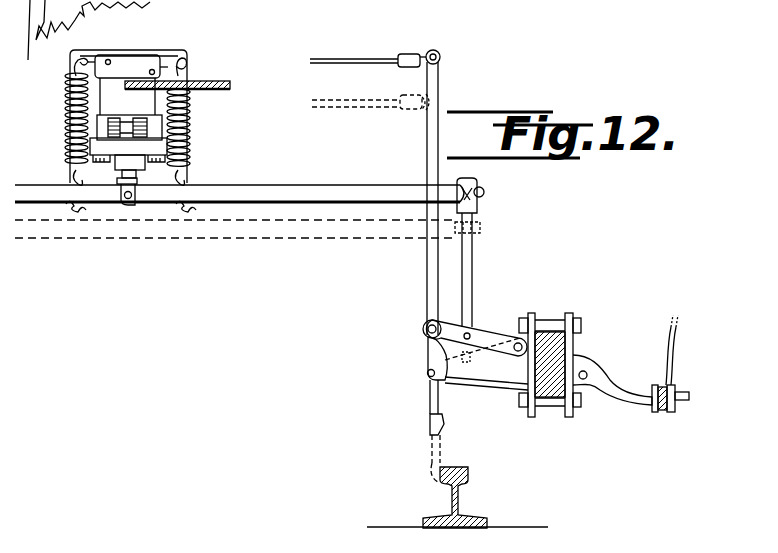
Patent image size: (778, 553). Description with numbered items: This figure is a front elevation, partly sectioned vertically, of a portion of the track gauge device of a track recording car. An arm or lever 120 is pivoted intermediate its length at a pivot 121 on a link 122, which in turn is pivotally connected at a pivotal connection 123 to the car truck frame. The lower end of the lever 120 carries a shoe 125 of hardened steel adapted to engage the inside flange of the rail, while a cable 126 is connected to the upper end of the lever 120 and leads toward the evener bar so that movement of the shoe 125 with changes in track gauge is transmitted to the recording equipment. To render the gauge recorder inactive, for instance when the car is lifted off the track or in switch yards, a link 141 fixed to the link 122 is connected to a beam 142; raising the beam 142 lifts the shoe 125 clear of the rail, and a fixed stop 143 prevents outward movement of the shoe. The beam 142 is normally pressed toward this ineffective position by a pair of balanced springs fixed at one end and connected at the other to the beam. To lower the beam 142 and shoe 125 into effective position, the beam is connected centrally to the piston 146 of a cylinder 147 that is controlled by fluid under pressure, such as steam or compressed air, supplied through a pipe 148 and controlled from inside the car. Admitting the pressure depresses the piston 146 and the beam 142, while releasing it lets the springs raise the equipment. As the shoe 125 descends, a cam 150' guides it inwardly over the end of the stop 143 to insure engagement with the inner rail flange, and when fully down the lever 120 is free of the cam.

The arm 120 is at (423, 257).
The pivot 121 is at (423, 329).
The link 122 is at (491, 332).
The pivotal connection 123 is at (536, 328).
The shoe 125 is at (445, 424).
The cable 126 is at (336, 55).
The link 141 is at (468, 260).
The beam 142 is at (273, 184).
The fixed stop 143 is at (484, 378).
The piston 146 is at (124, 187).
The cylinder 147 is at (128, 116).
The pipe 148 is at (223, 83).
The cam 150' is at (394, 368).